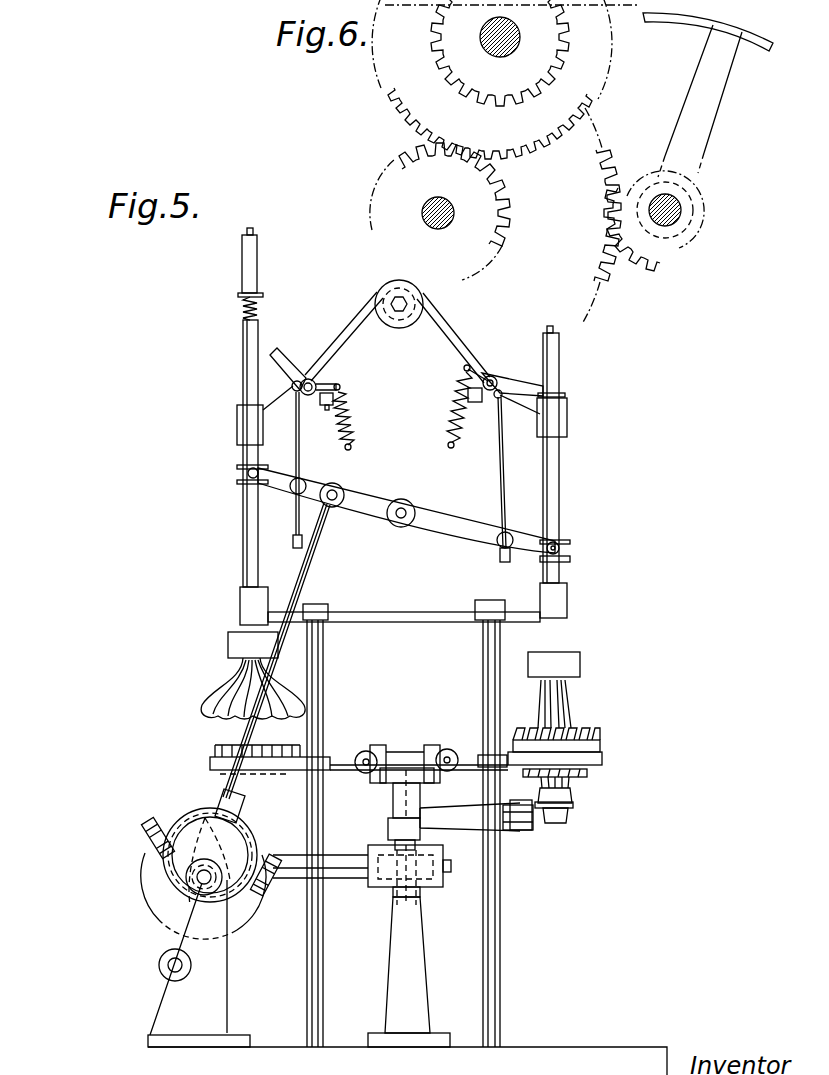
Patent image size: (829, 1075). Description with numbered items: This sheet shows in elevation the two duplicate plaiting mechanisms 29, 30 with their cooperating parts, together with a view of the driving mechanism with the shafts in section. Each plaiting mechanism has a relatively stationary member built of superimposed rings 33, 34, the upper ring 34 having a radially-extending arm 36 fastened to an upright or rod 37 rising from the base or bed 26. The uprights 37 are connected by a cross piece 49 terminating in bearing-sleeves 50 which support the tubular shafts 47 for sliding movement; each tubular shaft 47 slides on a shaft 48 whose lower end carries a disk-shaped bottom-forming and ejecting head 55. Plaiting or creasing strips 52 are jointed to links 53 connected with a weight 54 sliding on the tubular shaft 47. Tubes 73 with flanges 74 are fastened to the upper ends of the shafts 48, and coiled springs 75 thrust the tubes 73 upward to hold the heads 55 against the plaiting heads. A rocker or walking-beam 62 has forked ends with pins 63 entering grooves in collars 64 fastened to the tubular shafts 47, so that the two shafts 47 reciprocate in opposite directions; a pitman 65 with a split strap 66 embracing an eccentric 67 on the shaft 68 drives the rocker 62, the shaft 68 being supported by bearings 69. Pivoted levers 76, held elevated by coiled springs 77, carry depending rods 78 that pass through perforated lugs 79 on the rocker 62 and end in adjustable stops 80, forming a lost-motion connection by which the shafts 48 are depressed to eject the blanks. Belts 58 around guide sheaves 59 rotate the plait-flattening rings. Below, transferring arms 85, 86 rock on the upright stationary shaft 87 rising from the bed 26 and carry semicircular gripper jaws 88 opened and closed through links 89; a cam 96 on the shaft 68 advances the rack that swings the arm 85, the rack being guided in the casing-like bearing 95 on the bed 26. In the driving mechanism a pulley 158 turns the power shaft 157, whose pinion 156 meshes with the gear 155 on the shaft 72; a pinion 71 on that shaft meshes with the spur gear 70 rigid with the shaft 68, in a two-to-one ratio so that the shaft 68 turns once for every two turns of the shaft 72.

In FIG. 6, the shaft 68 is at (497, 58).
In FIG. 5, the shaft 68 is at (200, 880).
In FIG. 6, the spur gear 70 is at (402, 112).
In FIG. 6, the pinion 71 is at (506, 236).
In FIG. 6, the shaft 72 is at (455, 211).
In FIG. 5, the shaft 72 is at (170, 968).
In FIG. 6, the gear 155 is at (612, 276).
In FIG. 6, the pinion 156 is at (668, 268).
In FIG. 6, the power shaft 157 is at (682, 210).
In FIG. 6, the pulley 158 is at (697, 129).
In FIG. 5, the shaft 48 is at (255, 231).
In FIG. 5, the tube 73 is at (258, 262).
In FIG. 5, the flange 74 is at (238, 295).
In FIG. 5, the coiled spring 75 is at (260, 312).
In FIG. 5, the tubular shaft 47 is at (243, 375).
In FIG. 5, the pins 63 is at (248, 470).
In FIG. 5, the collar 64 is at (572, 558).
In FIG. 5, the actuating members 76 is at (283, 365).
In FIG. 5, the coiled springs 77 is at (440, 415).
In FIG. 5, the rods 78 is at (300, 460).
In FIG. 5, the rocker or walking-beam 62 is at (375, 492).
In FIG. 5, the lugs or projections 79 is at (305, 484).
In FIG. 5, the stops 80 is at (293, 538).
In FIG. 5, the pitman 65 is at (300, 588).
In FIG. 5, the bearing-sleeves 50 is at (240, 600).
In FIG. 5, the cross piece 49 is at (420, 612).
In FIG. 5, the upright or rod 37 is at (483, 673).
In FIG. 5, the plaiting mechanism 30 is at (390, 693).
In FIG. 5, the links 53 is at (205, 700).
In FIG. 5, the plaiting mechanism 29 is at (384, 672).
In FIG. 5, the weight 54 is at (228, 645).
In FIG. 5, the ring 34 is at (602, 757).
In FIG. 5, the ring 33 is at (602, 762).
In FIG. 5, the plaiting or creasing members 52 is at (590, 776).
In FIG. 5, the gripper members or jaws 88 is at (573, 806).
In FIG. 5, the head 55 is at (565, 822).
In FIG. 5, the arm 36 is at (480, 757).
In FIG. 5, the bands or belts 58 is at (360, 750).
In FIG. 5, the guide sheaves 59 is at (366, 750).
In FIG. 5, the stationary shaft 87 is at (392, 780).
In FIG. 5, the arm or lever 85 is at (393, 805).
In FIG. 5, the arm or lever 86 is at (455, 812).
In FIG. 5, the rod or link 89 is at (480, 832).
In FIG. 5, the bearing 95 is at (380, 895).
In FIG. 5, the split strap 66 is at (205, 812).
In FIG. 5, the eccentric 67 is at (185, 858).
In FIG. 5, the cam 96 is at (148, 866).
In FIG. 5, the bearings 69 is at (228, 985).
In FIG. 5, the base or bed 26 is at (407, 1061).